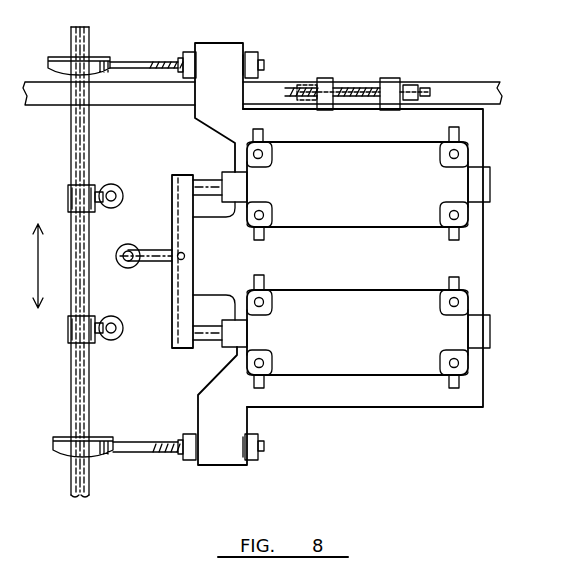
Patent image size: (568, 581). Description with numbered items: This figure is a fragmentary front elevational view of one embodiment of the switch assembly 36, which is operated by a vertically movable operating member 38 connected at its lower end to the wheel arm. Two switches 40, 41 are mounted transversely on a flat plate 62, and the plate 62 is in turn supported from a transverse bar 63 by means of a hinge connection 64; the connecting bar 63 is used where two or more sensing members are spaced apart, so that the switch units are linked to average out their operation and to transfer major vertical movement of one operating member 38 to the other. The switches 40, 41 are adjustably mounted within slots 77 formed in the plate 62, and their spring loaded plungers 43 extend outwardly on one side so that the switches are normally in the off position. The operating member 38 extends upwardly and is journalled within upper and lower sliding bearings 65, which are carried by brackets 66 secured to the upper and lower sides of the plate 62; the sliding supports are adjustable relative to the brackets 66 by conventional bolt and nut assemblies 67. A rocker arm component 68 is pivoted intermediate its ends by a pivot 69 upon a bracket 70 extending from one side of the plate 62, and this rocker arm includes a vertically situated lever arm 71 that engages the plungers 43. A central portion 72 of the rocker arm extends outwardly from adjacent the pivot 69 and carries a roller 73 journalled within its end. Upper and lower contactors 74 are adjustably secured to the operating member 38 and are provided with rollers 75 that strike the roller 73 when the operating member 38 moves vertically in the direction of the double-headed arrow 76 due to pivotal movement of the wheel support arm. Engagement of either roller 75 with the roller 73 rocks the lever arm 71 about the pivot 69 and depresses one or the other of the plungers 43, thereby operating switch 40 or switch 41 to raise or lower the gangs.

The switch assembly 36 is at (524, 301).
The operating member 38 is at (72, 155).
The switch 40 is at (381, 197).
The switch 41 is at (372, 340).
The spring loaded plunger 43 is at (200, 183).
The flat plate 62 is at (392, 400).
The transverse bar 63 is at (462, 90).
The hinge connection 64 is at (322, 88).
The sliding bearing 65 is at (93, 58).
The bracket 66 is at (226, 56).
The bolt and nut assembly 67 is at (274, 62).
The rocker arm component 68 is at (163, 341).
The pivot 69 is at (183, 252).
The bracket 70 is at (226, 277).
The lever arm 71 is at (178, 176).
The central portion 72 is at (158, 262).
The roller 73 is at (119, 251).
The contactor 74 is at (68, 198).
The roller 75 is at (120, 183).
The double-headed arrow 76 is at (38, 272).
The slot 77 is at (458, 131).